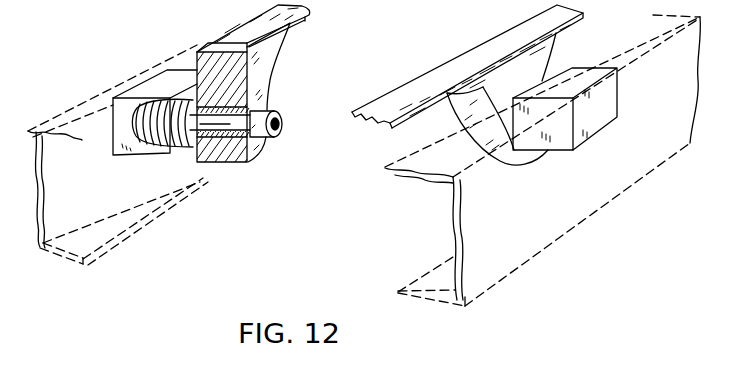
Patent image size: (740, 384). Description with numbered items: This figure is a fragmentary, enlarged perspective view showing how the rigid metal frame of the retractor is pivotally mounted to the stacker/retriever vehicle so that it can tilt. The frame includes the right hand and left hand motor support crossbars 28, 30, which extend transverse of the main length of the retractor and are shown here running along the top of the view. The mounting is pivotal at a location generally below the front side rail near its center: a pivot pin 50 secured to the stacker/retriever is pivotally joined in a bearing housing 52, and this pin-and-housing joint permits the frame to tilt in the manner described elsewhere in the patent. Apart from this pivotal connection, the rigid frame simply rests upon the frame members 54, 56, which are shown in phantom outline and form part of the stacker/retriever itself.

The right hand motor support crossbar 28 is at (507, 40).
The left hand motor support crossbar 30 is at (306, 16).
The pivot pin 50 is at (213, 157).
The bearing housing 52 is at (270, 74).
The frame member 54 is at (123, 238).
The frame member 56 is at (537, 253).